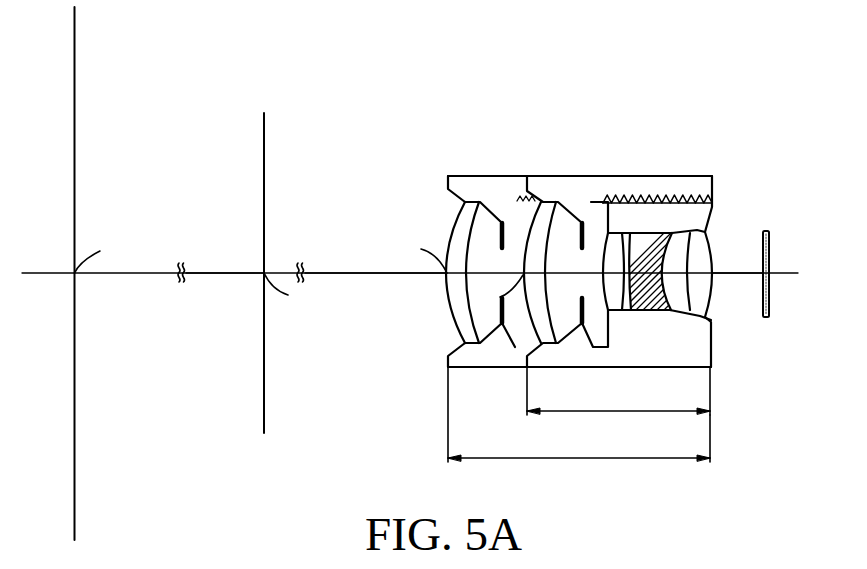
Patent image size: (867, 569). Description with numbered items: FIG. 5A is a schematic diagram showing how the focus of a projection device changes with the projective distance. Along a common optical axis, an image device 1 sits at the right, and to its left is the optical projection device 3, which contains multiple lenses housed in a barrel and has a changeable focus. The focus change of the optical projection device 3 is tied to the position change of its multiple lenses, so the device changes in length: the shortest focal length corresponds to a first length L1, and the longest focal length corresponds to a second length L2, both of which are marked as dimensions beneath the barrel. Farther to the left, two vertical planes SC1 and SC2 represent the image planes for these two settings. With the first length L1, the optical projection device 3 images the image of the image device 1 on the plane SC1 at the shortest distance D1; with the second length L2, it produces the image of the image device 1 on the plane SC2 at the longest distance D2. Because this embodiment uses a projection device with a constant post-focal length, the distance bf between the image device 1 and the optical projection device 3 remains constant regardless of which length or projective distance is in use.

The image device 1 is at (768, 230).
The optical projection device 3 is at (678, 175).
The plane SC1 is at (74, 37).
The plane SC2 is at (264, 142).
The shortest distance D1 is at (414, 287).
The longest distance D2 is at (225, 246).
The post-focal length distance bf is at (763, 273).
The first length L1 is at (618, 391).
The second length L2 is at (579, 415).